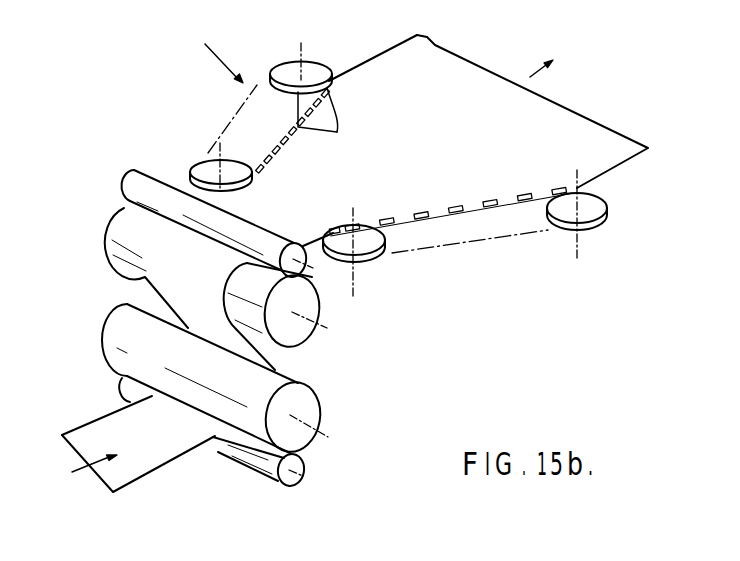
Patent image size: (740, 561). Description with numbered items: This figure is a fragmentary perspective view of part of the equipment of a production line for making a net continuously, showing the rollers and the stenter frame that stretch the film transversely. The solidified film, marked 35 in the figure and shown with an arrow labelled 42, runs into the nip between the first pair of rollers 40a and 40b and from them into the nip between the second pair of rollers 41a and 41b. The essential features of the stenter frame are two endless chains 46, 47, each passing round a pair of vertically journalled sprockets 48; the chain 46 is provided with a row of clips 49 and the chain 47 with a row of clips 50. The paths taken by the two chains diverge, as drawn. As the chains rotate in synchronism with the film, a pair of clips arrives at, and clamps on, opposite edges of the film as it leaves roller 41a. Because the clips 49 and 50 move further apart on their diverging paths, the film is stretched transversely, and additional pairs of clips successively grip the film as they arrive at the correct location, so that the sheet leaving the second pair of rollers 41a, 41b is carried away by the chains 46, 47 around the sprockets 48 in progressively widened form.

The web 35 is at (103, 427).
The roller of first pair of rollers 40a is at (303, 413).
The roller of first pair of rollers 40b is at (300, 478).
The roller of second pair of rollers 41a is at (120, 225).
The roller of second pair of rollers 41b is at (120, 180).
The direction arrow 42 is at (215, 51).
The endless chain 46 is at (232, 122).
The endless chain 47 is at (490, 242).
The vertically journalled sprockets 48 is at (296, 72).
The clips 49 is at (330, 121).
The clips 50 is at (397, 222).